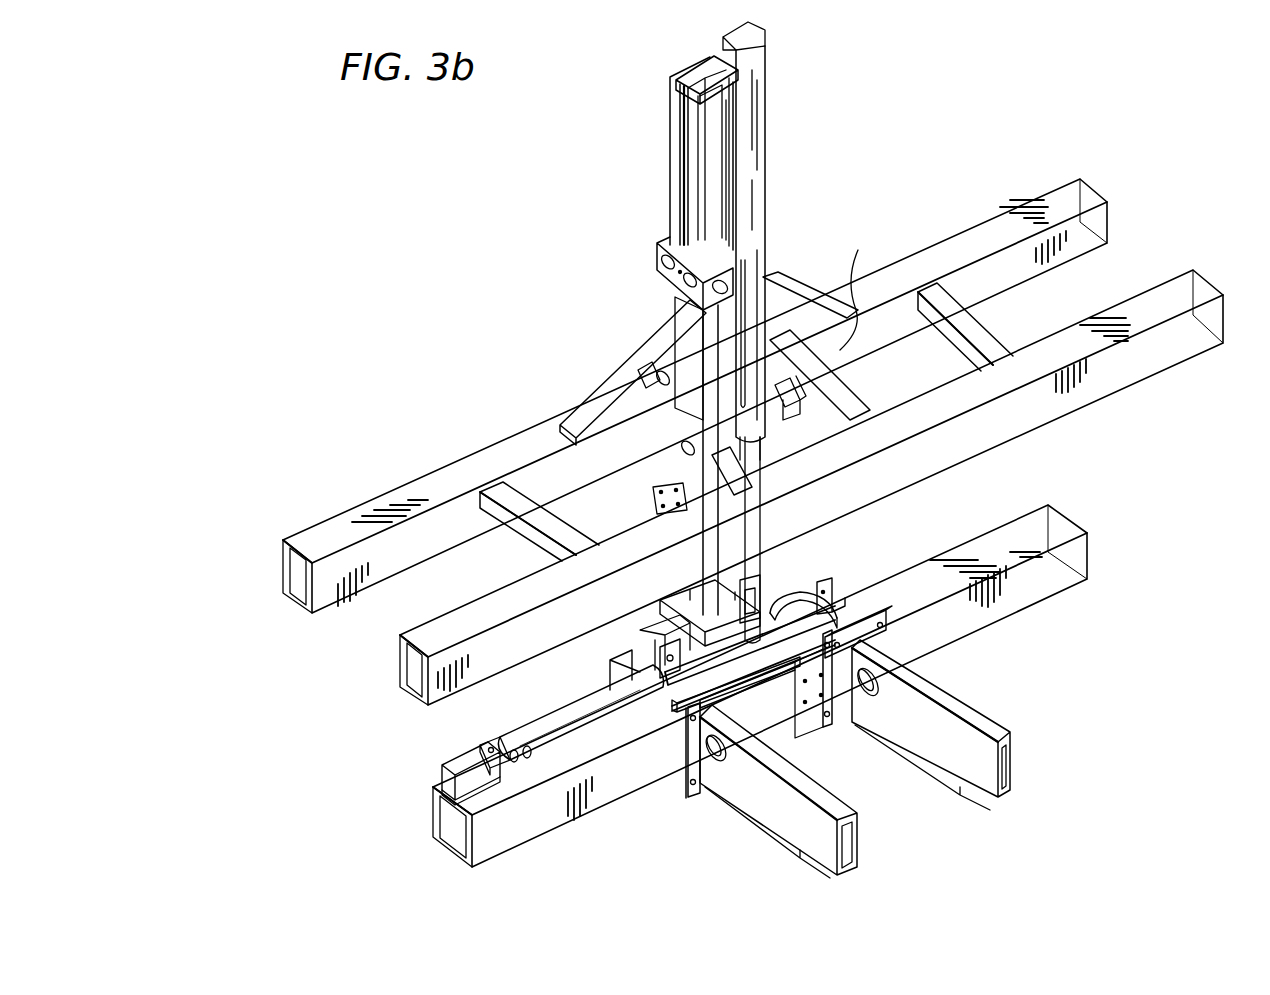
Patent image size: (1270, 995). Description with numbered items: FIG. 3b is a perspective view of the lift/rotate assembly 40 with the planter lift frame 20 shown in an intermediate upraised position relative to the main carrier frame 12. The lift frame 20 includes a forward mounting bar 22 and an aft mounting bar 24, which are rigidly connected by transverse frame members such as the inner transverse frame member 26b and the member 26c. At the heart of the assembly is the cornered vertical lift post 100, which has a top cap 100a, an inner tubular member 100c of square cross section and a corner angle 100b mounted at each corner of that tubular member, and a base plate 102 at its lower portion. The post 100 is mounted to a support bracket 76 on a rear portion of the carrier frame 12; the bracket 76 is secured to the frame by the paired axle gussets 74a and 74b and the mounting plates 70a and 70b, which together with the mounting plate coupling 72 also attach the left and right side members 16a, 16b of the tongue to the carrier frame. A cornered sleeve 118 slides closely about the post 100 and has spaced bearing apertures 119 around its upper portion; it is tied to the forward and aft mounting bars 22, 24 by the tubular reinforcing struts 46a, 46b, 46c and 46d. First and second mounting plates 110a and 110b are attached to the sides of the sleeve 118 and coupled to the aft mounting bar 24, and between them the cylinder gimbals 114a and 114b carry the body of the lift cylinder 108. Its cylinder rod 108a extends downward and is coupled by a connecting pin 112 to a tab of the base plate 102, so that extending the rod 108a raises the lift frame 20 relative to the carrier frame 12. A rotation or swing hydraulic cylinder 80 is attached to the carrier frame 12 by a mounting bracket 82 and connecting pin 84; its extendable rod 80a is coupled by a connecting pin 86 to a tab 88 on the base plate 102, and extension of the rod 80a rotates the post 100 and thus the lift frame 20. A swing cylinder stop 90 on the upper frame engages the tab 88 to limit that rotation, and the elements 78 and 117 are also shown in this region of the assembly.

The main carrier frame 12 is at (527, 824).
The left side member of tongue 16a is at (1000, 740).
The right side member of tongue 16b is at (858, 852).
The planter lift frame 20 is at (318, 662).
The forward mounting bar 22 is at (400, 665).
The aft mounting bar 24 is at (320, 535).
The inner transverse frame member 26b is at (1000, 338).
The cross member 26c is at (493, 470).
The lift/rotate assembly 40 is at (480, 226).
The tubular reinforcing strut 46a is at (588, 398).
The tubular reinforcing strut 46b is at (797, 298).
The tubular reinforcing strut 46c is at (852, 405).
The tubular reinforcing strut 46d is at (740, 470).
The mounting plate 70a is at (843, 718).
The mounting plate 70b is at (688, 800).
The mounting plate coupling 72 is at (810, 722).
The axle gusset 74a is at (797, 600).
The axle gusset 74b is at (690, 700).
The support bracket 76 is at (628, 660).
The pivot bracket 78 is at (652, 645).
The rotation hydraulic cylinder 80 is at (510, 730).
The extendable rod 80a is at (757, 683).
The mounting bracket 82 is at (452, 757).
The connecting pin 84 is at (485, 745).
The connecting pin 86 is at (660, 656).
The tab 88 is at (733, 648).
The swing cylinder stop 90 is at (838, 603).
The vertical lift post 100 is at (658, 138).
The top cap 100a is at (712, 70).
The corner angle 100b is at (678, 148).
The inner tubular member 100c is at (688, 232).
The base plate 102 is at (672, 612).
The lift cylinder 108 is at (760, 80).
The cylinder rod 108a is at (768, 465).
The first mounting plate 110a is at (790, 392).
The second mounting plate 110b is at (645, 375).
The connecting pin 112 is at (750, 580).
The cylinder gimbal 114a is at (858, 250).
The cylinder gimbal 114b is at (745, 260).
The bolt plate 117 is at (663, 380).
The sleeve 118 is at (672, 350).
The bearing apertures 119 is at (662, 262).